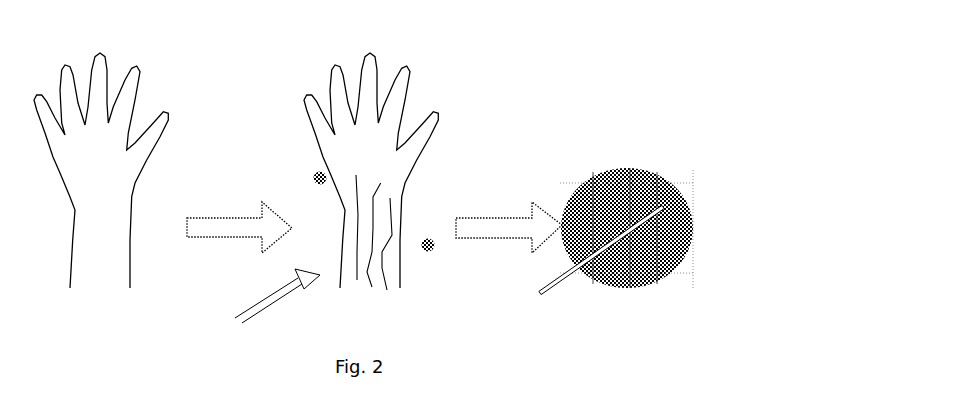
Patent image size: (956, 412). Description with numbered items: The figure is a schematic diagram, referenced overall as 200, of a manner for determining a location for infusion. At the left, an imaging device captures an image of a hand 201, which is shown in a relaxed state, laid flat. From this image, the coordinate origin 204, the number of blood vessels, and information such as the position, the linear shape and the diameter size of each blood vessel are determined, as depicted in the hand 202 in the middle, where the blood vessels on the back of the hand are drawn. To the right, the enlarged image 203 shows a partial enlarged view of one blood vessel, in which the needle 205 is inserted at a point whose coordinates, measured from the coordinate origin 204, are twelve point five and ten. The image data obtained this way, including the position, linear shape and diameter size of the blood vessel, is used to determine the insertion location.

The vein authentication process 200 is at (364, 177).
The hand 201 is at (101, 190).
The hand 202 is at (371, 190).
The enlarged image 203 is at (627, 249).
The coordinate origin 204 is at (270, 303).
The needle 205 is at (586, 260).